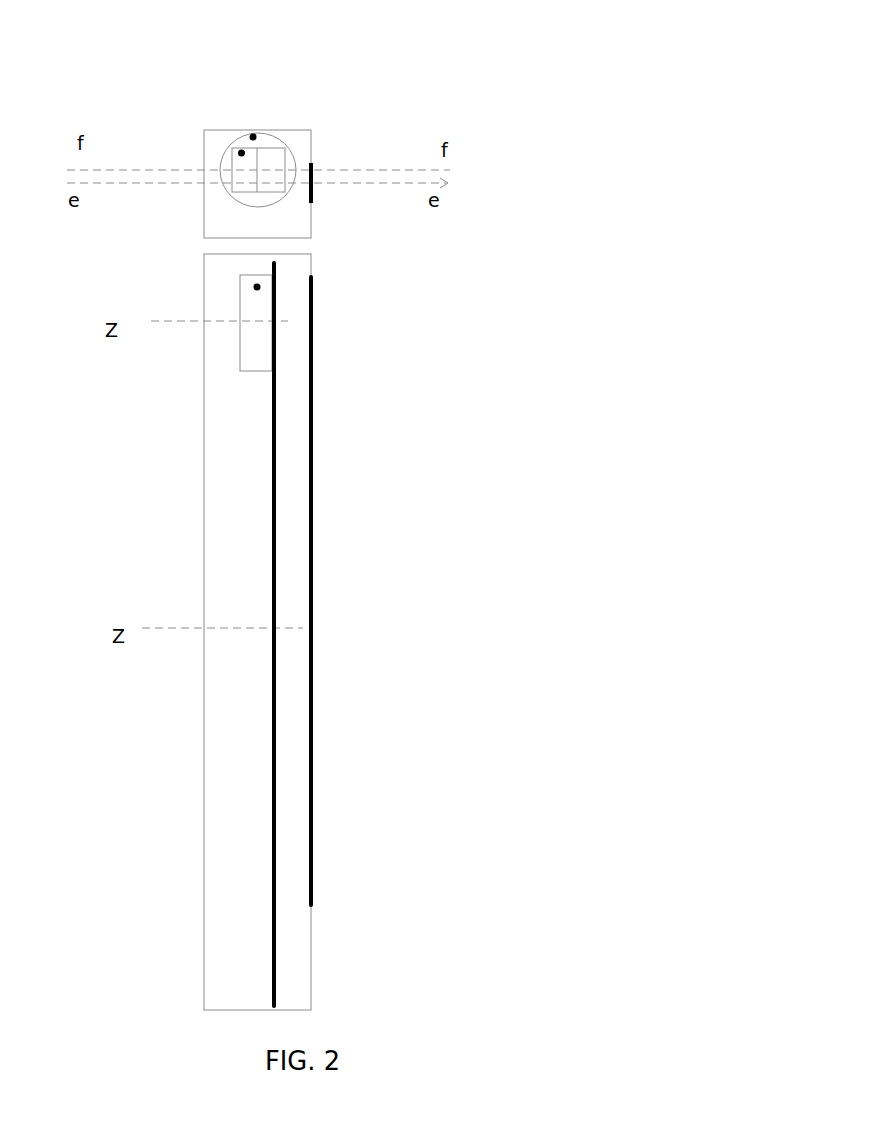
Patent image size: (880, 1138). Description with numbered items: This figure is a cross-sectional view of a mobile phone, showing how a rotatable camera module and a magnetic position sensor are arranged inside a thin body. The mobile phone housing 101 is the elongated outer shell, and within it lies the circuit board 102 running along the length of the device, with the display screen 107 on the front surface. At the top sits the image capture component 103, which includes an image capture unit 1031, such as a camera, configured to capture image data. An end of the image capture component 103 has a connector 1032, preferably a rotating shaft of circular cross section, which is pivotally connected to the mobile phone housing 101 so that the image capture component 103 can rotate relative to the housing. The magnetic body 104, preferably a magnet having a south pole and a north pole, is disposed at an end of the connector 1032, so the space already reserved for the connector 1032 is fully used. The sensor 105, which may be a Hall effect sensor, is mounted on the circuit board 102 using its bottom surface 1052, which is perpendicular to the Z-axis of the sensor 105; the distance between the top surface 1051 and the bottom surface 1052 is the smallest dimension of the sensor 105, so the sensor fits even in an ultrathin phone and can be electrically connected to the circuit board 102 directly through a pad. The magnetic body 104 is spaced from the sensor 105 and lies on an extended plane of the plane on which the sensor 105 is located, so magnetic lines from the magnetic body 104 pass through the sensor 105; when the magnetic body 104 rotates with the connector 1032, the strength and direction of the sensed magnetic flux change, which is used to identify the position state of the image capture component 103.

The mobile phone housing 101 is at (312, 262).
The circuit board 102 is at (276, 422).
The image capture component 103 is at (333, 137).
The image capture unit 1031 is at (313, 168).
The connector 1032 is at (256, 134).
The magnetic body 104 is at (240, 150).
The sensor 105 is at (254, 286).
The top surface 1051 is at (239, 345).
The bottom surface 1052 is at (273, 354).
The display screen 107 is at (312, 504).